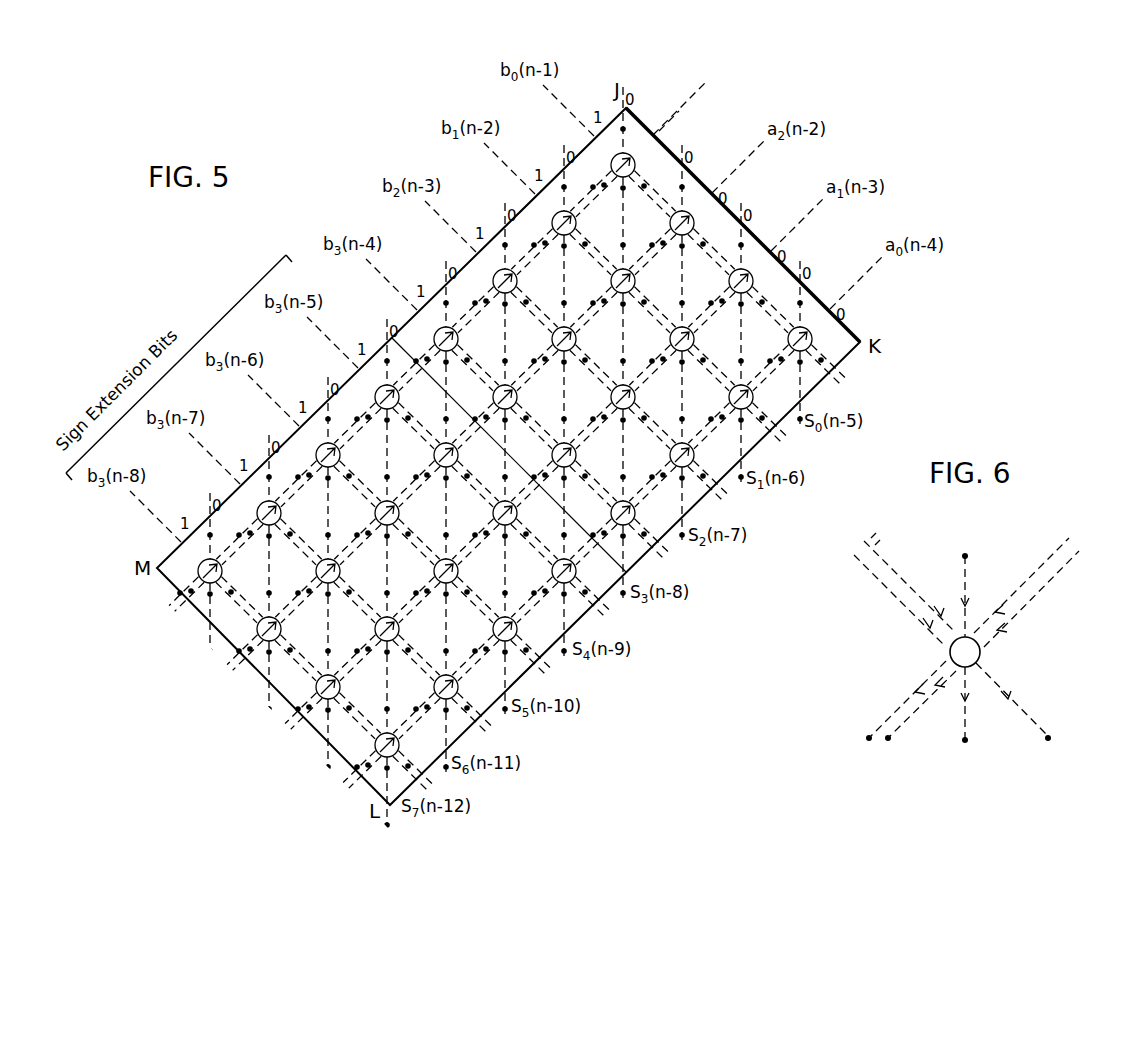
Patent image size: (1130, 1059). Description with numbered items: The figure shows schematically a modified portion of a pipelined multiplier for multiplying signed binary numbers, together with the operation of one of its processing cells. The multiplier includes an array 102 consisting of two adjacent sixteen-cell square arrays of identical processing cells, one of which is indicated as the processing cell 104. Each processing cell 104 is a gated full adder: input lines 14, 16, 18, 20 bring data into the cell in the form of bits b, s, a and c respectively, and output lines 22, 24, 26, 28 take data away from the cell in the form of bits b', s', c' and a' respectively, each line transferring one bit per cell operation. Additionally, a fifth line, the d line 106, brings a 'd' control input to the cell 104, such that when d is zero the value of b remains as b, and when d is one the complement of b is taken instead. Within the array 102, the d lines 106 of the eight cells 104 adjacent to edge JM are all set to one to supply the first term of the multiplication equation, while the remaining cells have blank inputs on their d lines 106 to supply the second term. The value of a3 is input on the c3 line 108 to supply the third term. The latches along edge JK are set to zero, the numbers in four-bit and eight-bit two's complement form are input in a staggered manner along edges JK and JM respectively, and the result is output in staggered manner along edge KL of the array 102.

In FIG. 5, the array 102 is at (332, 140).
In FIG. 5, the processing cell 104 is at (814, 342).
In FIG. 6, the processing cell 104 is at (982, 652).
In FIG. 6, the d line 106 is at (874, 541).
In FIG. 5, the c3 line 108 is at (660, 131).
In FIG. 6, the input line 14 is at (858, 550).
In FIG. 6, the input line 16 is at (966, 554).
In FIG. 6, the input line 18 is at (1056, 551).
In FIG. 6, the input line 20 is at (1076, 554).
In FIG. 6, the output line 22 is at (1054, 744).
In FIG. 6, the output line 24 is at (966, 742).
In FIG. 6, the output line 26 is at (877, 748).
In FIG. 6, the output line 28 is at (862, 740).